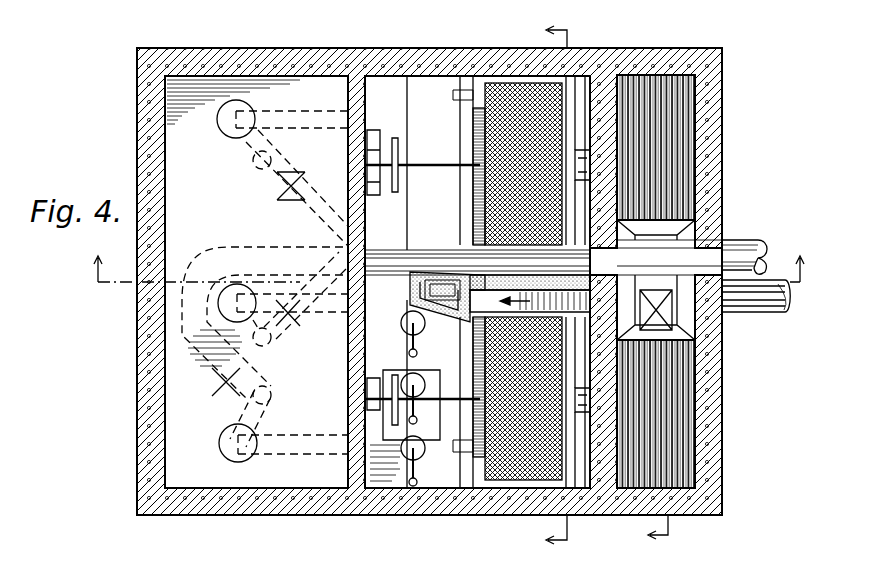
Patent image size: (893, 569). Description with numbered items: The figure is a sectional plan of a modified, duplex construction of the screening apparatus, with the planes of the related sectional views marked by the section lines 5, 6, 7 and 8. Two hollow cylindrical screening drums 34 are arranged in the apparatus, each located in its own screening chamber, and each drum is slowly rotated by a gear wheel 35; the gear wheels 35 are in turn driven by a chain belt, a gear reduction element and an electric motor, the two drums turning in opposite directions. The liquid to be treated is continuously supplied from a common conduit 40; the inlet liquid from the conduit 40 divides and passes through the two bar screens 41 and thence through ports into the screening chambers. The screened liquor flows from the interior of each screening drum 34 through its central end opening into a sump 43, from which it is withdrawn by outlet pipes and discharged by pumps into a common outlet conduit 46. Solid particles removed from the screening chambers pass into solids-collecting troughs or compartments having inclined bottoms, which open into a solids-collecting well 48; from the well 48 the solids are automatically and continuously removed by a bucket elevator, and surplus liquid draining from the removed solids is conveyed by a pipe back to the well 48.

The section line 5 is at (452, 284).
The section line 6 is at (566, 281).
The section line 7 is at (648, 262).
The section line 8 is at (662, 300).
The screening drum 34 is at (486, 188).
The gear wheel 35 is at (398, 148).
The common conduit 40 is at (760, 298).
The bar screen 41 is at (675, 168).
The sump 43 is at (385, 462).
The common outlet conduit 46 is at (744, 240).
The solids-collecting well 48 is at (455, 322).